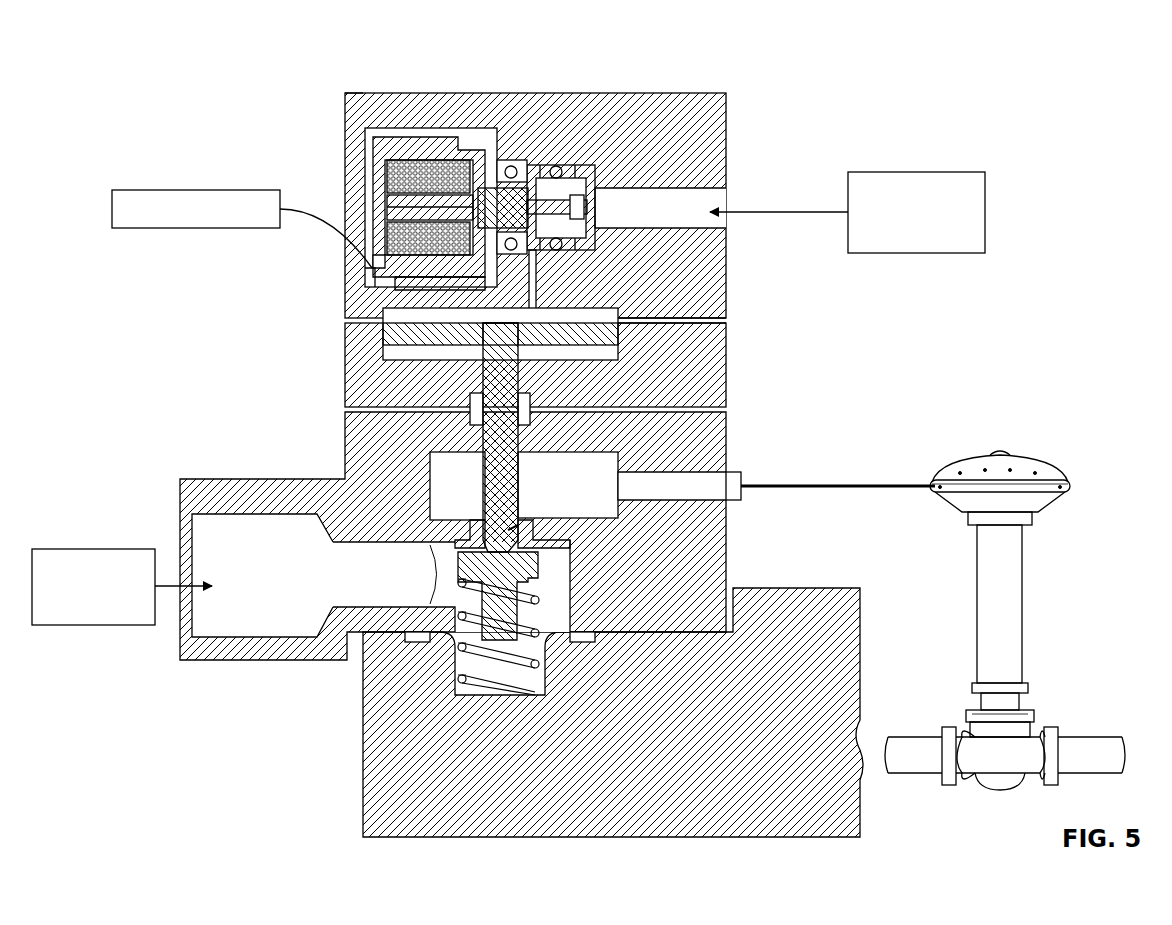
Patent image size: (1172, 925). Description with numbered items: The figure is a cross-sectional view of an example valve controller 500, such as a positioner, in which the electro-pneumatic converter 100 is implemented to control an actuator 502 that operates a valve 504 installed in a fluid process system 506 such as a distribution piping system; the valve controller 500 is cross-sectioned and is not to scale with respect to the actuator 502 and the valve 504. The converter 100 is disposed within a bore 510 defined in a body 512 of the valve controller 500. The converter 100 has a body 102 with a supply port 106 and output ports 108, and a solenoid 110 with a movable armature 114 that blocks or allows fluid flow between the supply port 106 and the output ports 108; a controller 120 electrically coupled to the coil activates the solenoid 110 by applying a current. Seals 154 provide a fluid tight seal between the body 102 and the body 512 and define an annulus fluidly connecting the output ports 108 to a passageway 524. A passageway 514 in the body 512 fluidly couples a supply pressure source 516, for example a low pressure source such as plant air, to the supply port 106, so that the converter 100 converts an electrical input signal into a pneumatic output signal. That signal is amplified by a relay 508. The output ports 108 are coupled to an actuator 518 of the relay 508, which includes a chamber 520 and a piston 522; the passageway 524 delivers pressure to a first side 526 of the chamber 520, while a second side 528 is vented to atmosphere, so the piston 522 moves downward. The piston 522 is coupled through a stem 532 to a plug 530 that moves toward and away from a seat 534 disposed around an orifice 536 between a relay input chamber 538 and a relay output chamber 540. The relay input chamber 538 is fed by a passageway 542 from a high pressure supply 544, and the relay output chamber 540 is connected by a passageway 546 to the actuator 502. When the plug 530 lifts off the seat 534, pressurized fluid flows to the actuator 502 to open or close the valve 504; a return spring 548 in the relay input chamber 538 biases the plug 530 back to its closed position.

The valve controller 500 is at (198, 80).
The relay 508 is at (215, 405).
The bore 510 is at (343, 130).
The body 512 is at (363, 93).
The actuator 518 is at (343, 340).
The passageway 546 is at (640, 460).
The passageway 514 is at (668, 216).
The passageway 524 is at (536, 290).
The piston 522 is at (413, 325).
The second side of the chamber 528 is at (383, 350).
The chamber 520 is at (705, 320).
The relay output chamber 540 is at (587, 486).
The orifice 536 is at (690, 476).
The passageway 542 is at (275, 588).
The relay input chamber 538 is at (400, 588).
The stem 532 is at (500, 470).
The seat 534 is at (545, 545).
The plug 530 is at (540, 582).
The return spring 548 is at (483, 655).
The converter 100 is at (343, 170).
The solenoid 110 is at (421, 138).
The body 102 is at (493, 205).
The supply port 106 is at (700, 142).
The armature 114 is at (540, 200).
The seals 154 is at (528, 175).
The output ports 108 is at (560, 170).
The first side of the chamber 526 is at (410, 312).
The controller 120 is at (173, 190).
The supply pressure source 516 is at (925, 172).
The high pressure supply 544 is at (100, 549).
The fluid process system 506 is at (945, 692).
The actuator 502 is at (1030, 465).
The valve 504 is at (1045, 745).